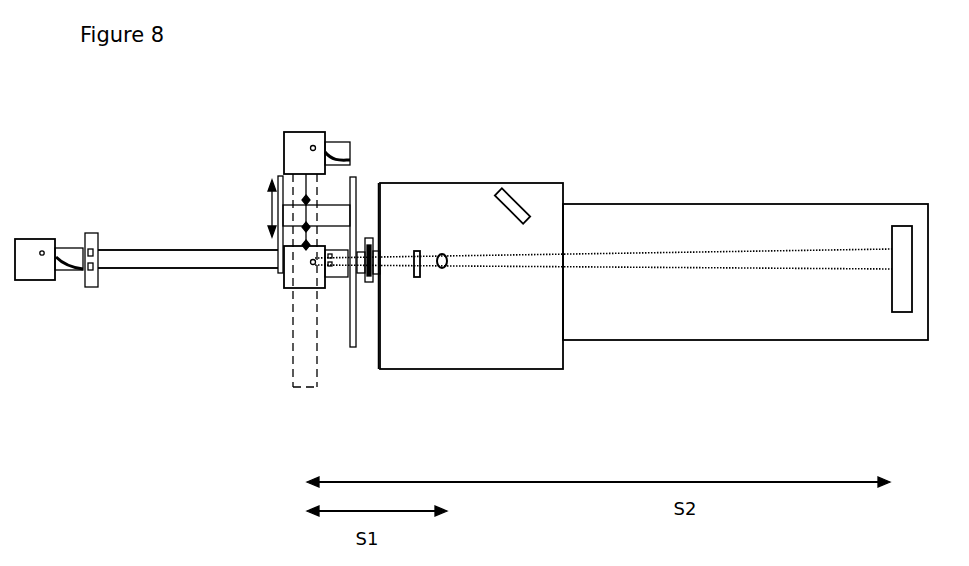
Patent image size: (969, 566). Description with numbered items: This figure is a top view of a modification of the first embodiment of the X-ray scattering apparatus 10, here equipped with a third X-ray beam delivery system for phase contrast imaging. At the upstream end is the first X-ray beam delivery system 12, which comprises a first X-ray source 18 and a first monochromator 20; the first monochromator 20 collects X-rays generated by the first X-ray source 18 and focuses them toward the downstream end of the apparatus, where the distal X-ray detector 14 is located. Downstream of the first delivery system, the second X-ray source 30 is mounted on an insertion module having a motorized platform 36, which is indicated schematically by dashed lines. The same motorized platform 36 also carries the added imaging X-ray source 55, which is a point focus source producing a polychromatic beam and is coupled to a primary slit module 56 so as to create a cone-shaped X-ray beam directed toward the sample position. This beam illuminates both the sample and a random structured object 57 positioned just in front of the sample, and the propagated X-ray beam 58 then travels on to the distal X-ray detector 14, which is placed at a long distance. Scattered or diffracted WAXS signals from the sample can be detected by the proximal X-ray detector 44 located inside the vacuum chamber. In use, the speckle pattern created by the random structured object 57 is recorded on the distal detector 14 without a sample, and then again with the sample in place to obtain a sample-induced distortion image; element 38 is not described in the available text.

The X-ray scattering apparatus 10 is at (459, 124).
The first X-ray beam delivery system 12 is at (58, 207).
The distal X-ray detector 14 is at (888, 227).
The first X-ray source 18 is at (38, 268).
The first monochromator 20 is at (68, 273).
The second X-ray source 30 is at (302, 148).
The motorized platform 36 is at (293, 383).
The rod 38 is at (187, 262).
The proximal X-ray detector 44 is at (515, 207).
The imaging X-ray source 55 is at (297, 290).
The primary slit module 56 is at (337, 288).
The random structured object 57 is at (417, 280).
The propagated X-ray beam 58 is at (647, 267).